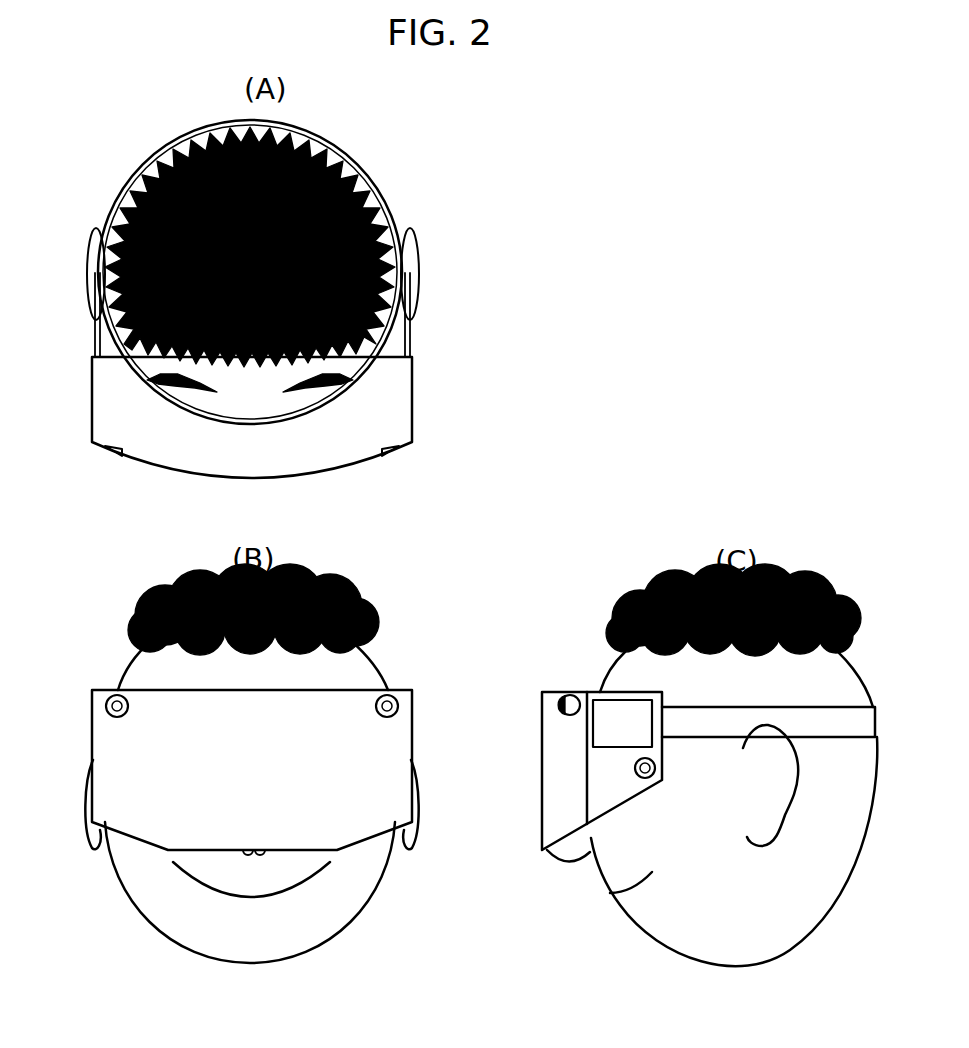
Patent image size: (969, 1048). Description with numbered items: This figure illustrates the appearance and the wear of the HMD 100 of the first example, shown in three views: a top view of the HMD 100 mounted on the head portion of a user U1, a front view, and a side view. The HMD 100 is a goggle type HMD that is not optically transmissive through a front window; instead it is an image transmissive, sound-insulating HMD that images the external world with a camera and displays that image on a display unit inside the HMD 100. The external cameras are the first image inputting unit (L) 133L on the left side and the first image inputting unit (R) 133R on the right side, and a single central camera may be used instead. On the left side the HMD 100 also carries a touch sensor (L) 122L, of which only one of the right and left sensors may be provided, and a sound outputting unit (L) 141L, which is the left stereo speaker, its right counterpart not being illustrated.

The user U1 is at (419, 277).
The HMD 100 is at (413, 385).
The first image inputting unit (R) 133R is at (112, 458).
The first image inputting unit (L) 133L is at (390, 458).
The touch sensor (L) 122L is at (655, 705).
The sound outputting unit (L) 141L is at (648, 785).